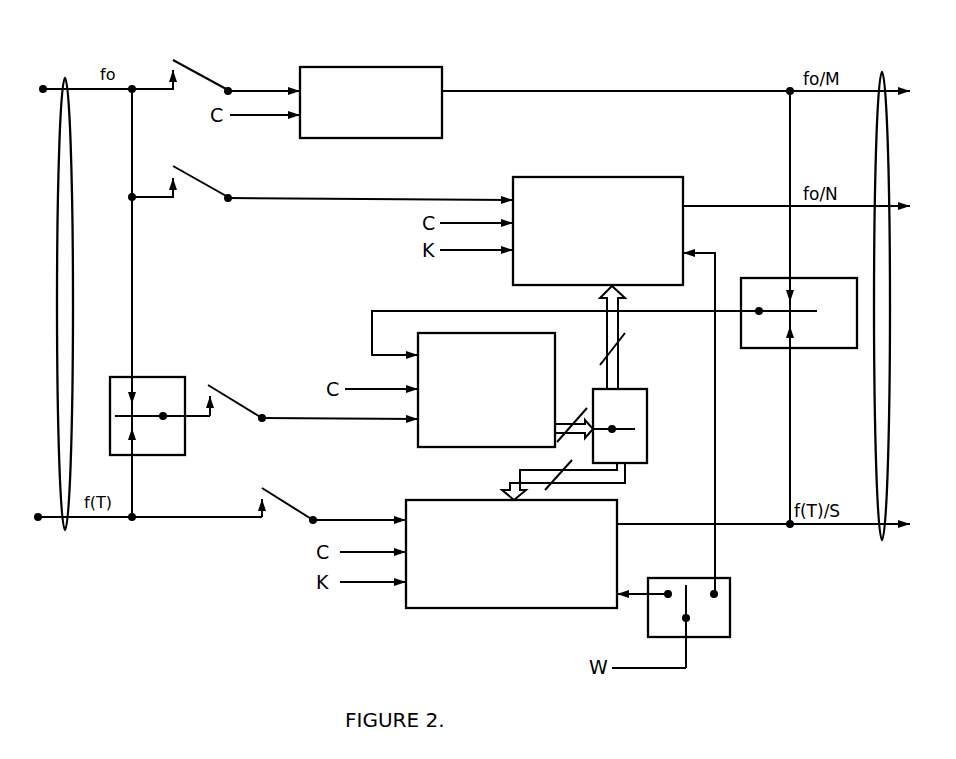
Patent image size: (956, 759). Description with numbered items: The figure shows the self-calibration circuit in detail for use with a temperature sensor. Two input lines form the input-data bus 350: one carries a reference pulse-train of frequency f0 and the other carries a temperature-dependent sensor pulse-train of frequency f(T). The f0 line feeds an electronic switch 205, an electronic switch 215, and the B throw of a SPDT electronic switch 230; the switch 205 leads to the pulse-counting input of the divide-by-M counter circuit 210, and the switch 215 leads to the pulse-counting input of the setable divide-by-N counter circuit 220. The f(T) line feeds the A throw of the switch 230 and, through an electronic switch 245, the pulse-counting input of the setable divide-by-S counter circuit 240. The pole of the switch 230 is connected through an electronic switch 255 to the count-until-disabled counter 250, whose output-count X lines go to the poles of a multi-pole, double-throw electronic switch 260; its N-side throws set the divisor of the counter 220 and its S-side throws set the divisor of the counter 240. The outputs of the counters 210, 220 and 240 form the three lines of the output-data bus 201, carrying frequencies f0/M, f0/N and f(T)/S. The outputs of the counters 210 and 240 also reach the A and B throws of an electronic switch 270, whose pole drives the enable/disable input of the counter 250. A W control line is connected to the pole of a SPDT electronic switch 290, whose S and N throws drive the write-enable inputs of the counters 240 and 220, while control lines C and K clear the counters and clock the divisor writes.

The electronic switch 205 is at (207, 47).
The divide-by-M counter circuit 210 is at (432, 47).
The electronic switch 215 is at (192, 217).
The divide-by-N counter circuit 220 is at (597, 154).
The SPDT electronic switch 230 is at (162, 353).
The divide-by-S counter circuit 240 is at (643, 502).
The electronic switch 245 is at (272, 547).
The count-until-disabled counter 250 is at (415, 465).
The electronic switch 255 is at (227, 429).
The multi-pole, double-throw electronic switch 260 is at (648, 458).
The electronic switch 270 is at (765, 370).
The SPDT electronic switch 290 is at (740, 651).
The input-data bus 350 is at (72, 552).
The output-data bus 201 is at (872, 562).